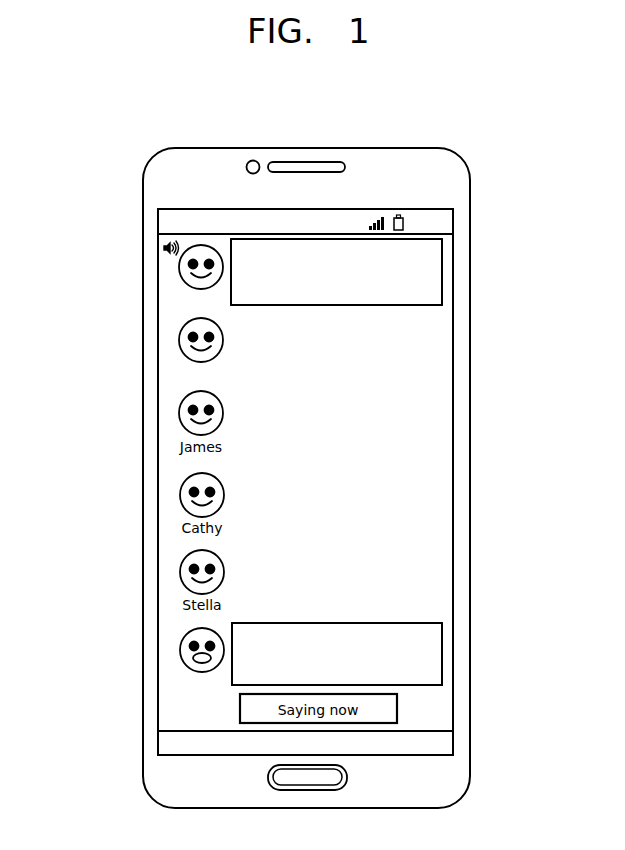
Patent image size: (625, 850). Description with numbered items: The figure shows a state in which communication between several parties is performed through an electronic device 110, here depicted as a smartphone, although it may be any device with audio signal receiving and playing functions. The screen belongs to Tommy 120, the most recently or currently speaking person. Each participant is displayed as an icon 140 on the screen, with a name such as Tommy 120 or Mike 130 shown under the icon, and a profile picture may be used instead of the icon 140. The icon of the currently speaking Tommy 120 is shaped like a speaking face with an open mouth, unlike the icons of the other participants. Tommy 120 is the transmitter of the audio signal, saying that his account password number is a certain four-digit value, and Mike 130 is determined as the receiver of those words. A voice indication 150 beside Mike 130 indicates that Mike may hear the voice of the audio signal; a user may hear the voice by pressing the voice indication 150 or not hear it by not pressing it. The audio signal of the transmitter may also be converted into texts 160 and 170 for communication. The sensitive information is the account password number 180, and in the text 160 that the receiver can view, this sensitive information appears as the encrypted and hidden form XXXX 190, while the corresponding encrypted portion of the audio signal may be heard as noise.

The electronic device 110 is at (143, 474).
The Tommy 120 is at (172, 682).
The Mike 130 is at (182, 297).
The icon 140 is at (179, 340).
The voice indication 150 is at (163, 247).
The text 160 is at (390, 272).
The text 170 is at (390, 654).
The number "1111" 180 is at (368, 672).
The "XXXX" 190 is at (365, 292).